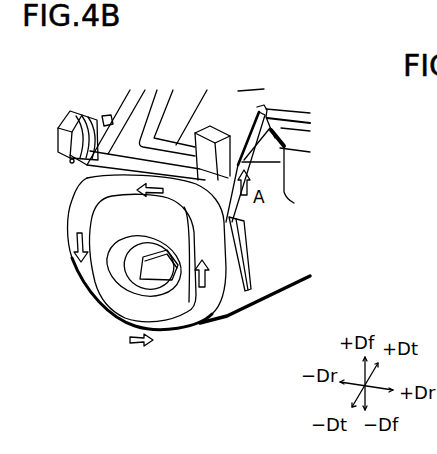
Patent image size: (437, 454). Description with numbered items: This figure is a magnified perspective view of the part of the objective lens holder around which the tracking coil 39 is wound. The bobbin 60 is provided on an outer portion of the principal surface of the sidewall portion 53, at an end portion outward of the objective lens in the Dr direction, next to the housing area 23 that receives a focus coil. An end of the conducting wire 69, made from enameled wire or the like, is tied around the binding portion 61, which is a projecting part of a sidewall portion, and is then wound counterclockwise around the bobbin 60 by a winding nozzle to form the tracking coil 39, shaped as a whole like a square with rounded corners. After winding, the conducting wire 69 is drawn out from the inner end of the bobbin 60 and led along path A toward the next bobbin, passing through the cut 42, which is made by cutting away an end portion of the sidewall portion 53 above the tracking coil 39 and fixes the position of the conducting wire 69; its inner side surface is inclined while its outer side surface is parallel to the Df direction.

The housing area 23 is at (151, 135).
The tracking coil 39 is at (213, 308).
The cut 42 is at (251, 150).
The sidewall portion 53 is at (283, 273).
The bobbin 60 is at (110, 322).
The binding portion 61 is at (73, 111).
The conducting wire 69 is at (229, 212).